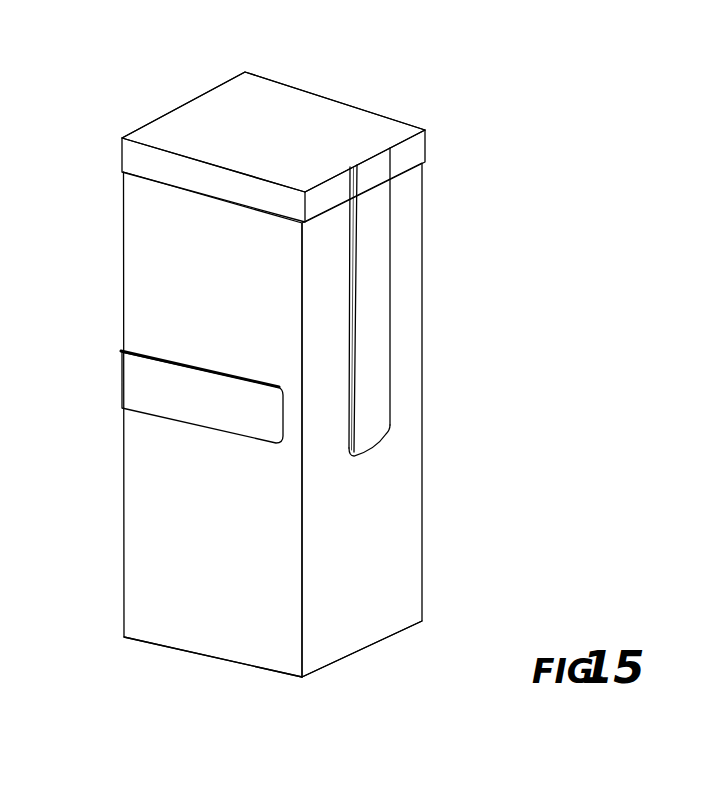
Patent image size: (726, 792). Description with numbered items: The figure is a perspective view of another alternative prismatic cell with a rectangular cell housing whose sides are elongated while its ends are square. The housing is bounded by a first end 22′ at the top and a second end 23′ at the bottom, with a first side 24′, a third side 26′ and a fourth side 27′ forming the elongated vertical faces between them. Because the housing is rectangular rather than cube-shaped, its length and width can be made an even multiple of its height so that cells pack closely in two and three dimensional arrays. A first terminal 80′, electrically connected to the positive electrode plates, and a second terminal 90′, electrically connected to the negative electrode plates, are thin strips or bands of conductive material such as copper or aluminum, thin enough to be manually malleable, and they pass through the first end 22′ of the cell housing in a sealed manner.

The first end 22′ is at (355, 127).
The second end 23′ is at (395, 634).
The first side 24′ is at (424, 492).
The third side 26′ is at (182, 632).
The fourth side 27′ is at (407, 582).
The first terminal 80′ is at (128, 379).
The second terminal 90′ is at (377, 370).